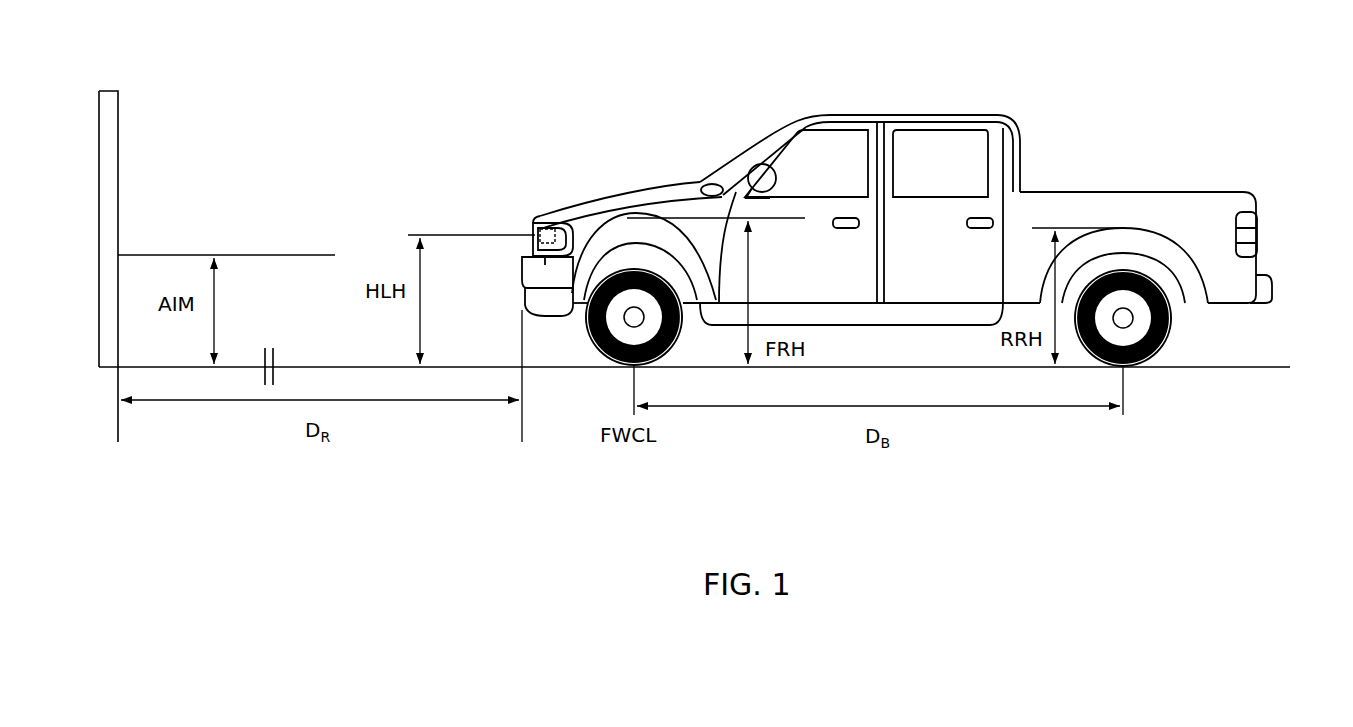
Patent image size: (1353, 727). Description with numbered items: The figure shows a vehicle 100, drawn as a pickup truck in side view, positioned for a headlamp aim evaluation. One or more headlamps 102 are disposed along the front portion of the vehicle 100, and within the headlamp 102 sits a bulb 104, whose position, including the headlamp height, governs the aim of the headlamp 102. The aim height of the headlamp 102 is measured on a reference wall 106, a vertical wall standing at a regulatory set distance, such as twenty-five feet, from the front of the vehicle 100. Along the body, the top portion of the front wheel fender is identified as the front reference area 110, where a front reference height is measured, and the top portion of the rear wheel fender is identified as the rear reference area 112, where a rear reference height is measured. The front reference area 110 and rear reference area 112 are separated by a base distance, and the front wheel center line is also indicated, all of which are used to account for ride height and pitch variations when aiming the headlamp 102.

The vehicle 100 is at (842, 203).
The headlamp 102 is at (526, 247).
The bulb 104 is at (536, 232).
The reference wall 106 is at (119, 147).
The front reference area 110 is at (628, 212).
The rear reference area 112 is at (1125, 226).